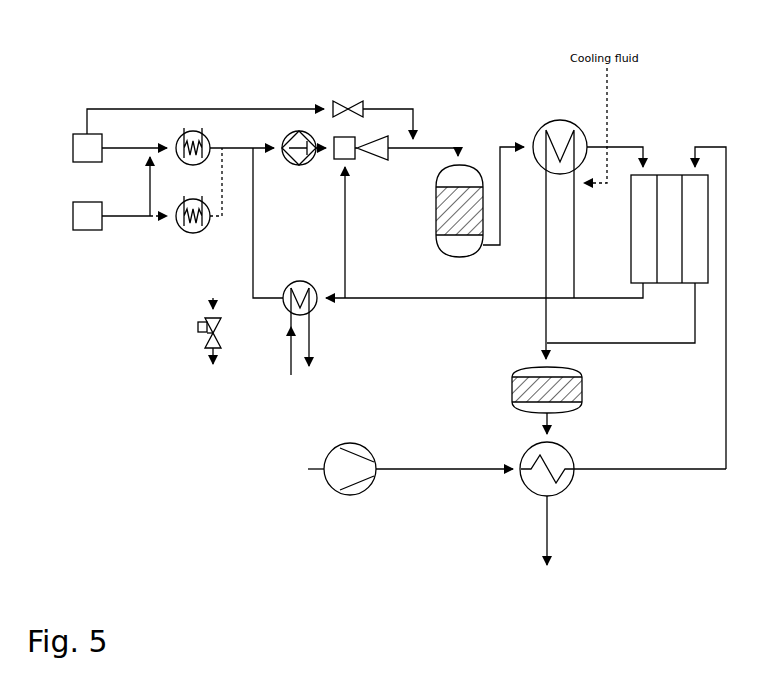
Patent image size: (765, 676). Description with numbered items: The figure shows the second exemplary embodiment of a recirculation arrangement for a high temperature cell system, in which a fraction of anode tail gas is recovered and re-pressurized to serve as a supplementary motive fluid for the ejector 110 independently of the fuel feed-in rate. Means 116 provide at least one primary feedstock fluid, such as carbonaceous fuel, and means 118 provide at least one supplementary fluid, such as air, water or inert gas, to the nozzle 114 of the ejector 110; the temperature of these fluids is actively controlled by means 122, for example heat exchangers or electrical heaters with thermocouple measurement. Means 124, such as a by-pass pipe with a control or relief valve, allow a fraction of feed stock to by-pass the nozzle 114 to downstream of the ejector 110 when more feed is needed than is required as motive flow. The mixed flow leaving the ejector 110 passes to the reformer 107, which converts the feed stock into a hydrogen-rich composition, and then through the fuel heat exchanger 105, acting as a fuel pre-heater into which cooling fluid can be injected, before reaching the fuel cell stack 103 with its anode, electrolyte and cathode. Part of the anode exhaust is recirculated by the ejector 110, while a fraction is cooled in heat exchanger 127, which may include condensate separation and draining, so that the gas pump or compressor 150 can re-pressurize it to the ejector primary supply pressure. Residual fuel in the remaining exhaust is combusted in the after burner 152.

The fuel cell stack 103 is at (672, 134).
The fuel heat exchanger 105 is at (543, 118).
The reformer 107 is at (472, 160).
The ejector 110 is at (369, 180).
The nozzle 114 is at (328, 165).
The means for providing primary feedstock fluid 116 is at (125, 143).
The means for providing supplementary fluid 118 is at (118, 222).
The temperature controlling means 122 is at (213, 135).
The by-pass means 124 is at (368, 104).
The heat exchanger 127 is at (247, 343).
The gas pump or compressor 150 is at (290, 129).
The after burner 152 is at (573, 413).